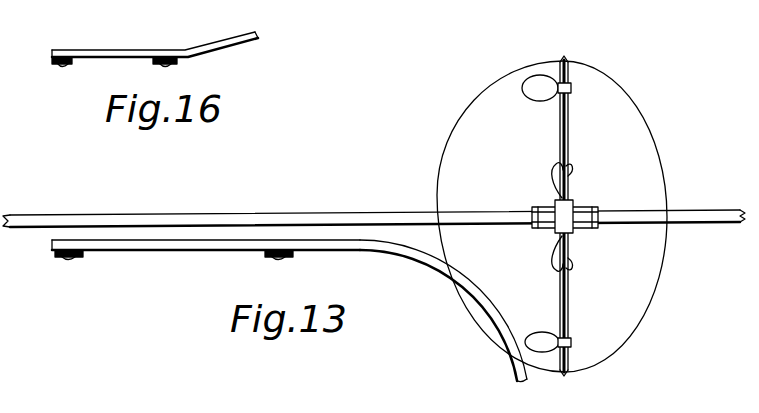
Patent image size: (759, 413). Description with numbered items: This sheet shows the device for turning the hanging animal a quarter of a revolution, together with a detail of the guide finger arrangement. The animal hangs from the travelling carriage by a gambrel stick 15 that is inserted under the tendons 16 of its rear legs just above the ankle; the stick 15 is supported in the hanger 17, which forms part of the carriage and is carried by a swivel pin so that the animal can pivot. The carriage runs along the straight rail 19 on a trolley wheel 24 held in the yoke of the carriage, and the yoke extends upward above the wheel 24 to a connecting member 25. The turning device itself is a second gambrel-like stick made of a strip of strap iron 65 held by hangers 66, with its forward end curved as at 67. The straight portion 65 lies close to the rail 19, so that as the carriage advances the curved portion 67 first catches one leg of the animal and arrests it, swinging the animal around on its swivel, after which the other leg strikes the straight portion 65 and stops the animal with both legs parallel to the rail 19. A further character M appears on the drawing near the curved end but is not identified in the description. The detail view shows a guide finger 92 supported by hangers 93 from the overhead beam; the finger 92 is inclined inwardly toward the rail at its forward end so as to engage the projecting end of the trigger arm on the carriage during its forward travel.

In FIG. 16, the guide finger 92 is at (112, 52).
In FIG. 16, the hangers 93 is at (52, 66).
In FIG. 13, the rail 19 is at (147, 206).
In FIG. 13, the strip of strap iron 65 is at (289, 311).
In FIG. 13, the hangers 66 is at (55, 257).
In FIG. 13, the curved portion 67 is at (487, 302).
In FIG. 13, the mandrel M is at (492, 340).
In FIG. 13, the gambrel stick 15 is at (568, 308).
In FIG. 13, the tendons 16 is at (572, 88).
In FIG. 13, the hanger 17 is at (572, 267).
In FIG. 13, the trolley wheel 24 is at (590, 208).
In FIG. 13, the connecting member 25 is at (563, 218).